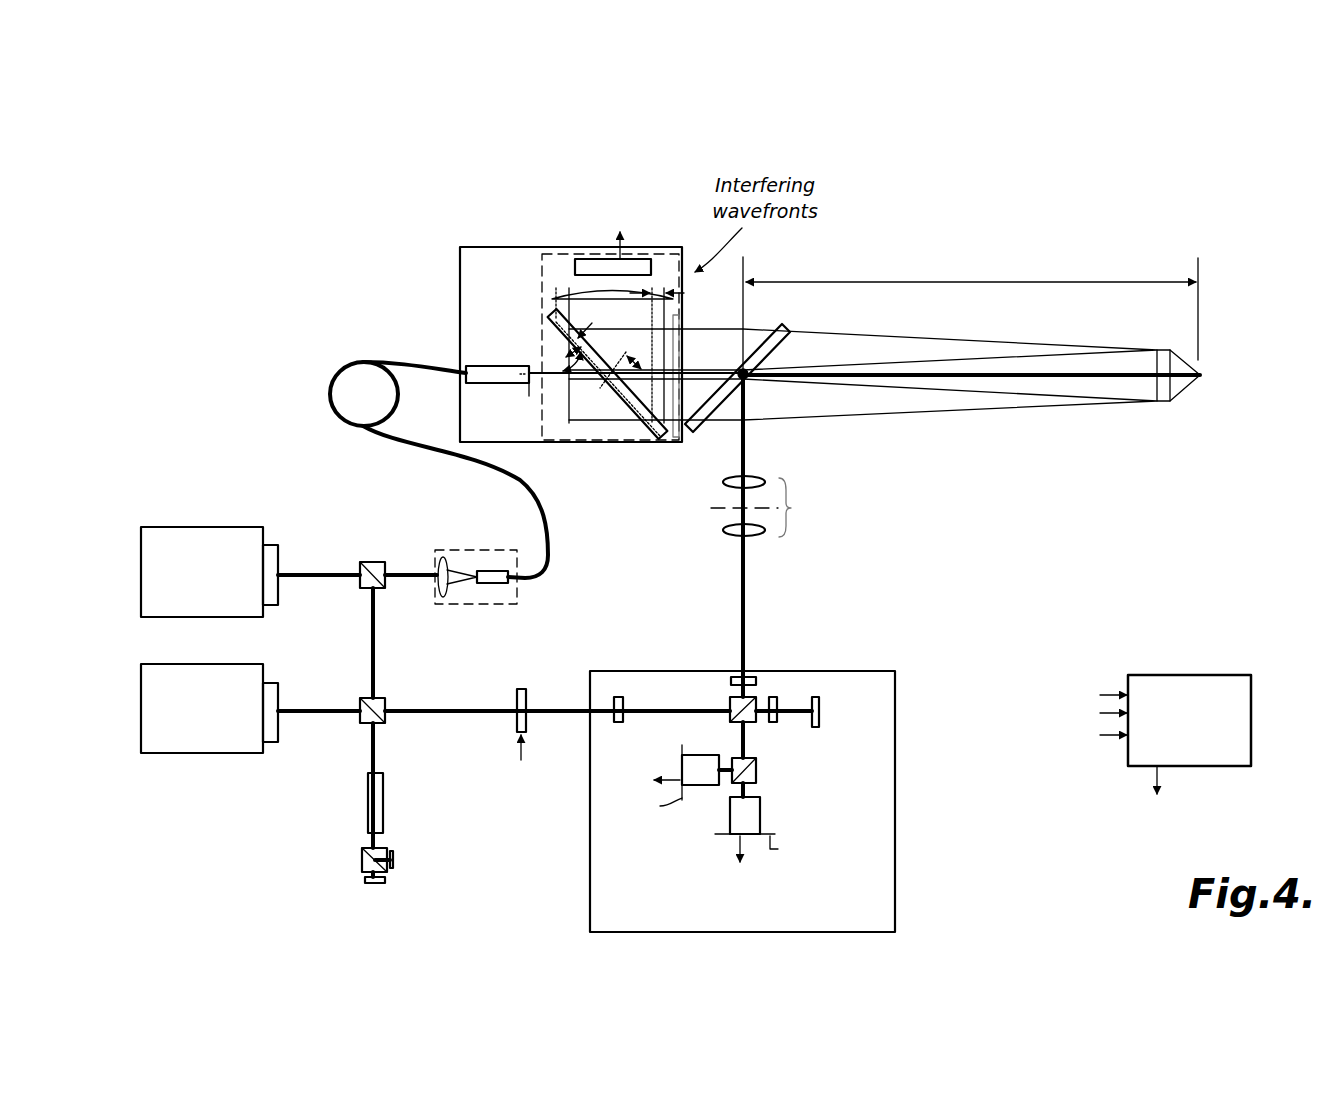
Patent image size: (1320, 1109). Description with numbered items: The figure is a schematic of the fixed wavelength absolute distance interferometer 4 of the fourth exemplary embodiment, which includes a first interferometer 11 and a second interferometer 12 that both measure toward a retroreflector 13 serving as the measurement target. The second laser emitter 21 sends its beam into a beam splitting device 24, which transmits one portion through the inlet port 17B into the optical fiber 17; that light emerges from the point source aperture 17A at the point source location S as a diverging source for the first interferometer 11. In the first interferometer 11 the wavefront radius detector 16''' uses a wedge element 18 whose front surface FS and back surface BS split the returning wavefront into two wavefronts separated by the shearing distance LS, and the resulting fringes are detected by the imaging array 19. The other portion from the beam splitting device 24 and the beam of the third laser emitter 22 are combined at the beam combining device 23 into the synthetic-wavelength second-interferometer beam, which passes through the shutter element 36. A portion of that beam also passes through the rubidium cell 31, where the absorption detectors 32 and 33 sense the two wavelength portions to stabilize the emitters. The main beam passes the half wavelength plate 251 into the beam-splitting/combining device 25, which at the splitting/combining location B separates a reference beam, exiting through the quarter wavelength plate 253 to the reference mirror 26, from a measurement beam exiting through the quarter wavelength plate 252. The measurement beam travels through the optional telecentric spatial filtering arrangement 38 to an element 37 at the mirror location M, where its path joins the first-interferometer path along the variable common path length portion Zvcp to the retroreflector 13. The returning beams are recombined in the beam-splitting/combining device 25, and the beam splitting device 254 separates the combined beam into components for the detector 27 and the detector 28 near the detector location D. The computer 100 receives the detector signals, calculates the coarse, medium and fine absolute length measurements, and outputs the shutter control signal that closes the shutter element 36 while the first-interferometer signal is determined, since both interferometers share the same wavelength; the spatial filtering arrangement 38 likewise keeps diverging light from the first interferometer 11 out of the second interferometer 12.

The fixed wavelength absolute distance interferometer 4 is at (1160, 543).
The first interferometer 11 is at (665, 247).
The second interferometer 12 is at (742, 801).
The retroreflector 13 is at (1180, 385).
The wavefront radius detector 16''' is at (636, 444).
The optical fiber 17 is at (330, 394).
The point source aperture 17A is at (500, 366).
The inlet port 17B is at (477, 550).
The wedge element 18 is at (553, 313).
The imaging array 19 is at (610, 258).
The second laser emitter 21 is at (141, 571).
The third laser emitter 22 is at (141, 709).
The beam combining device 23 is at (378, 698).
The beam splitting device 24 is at (375, 562).
The beam-splitting/combining device 25 is at (757, 722).
The reference mirror 26 is at (819, 717).
The λ2 detector 27 is at (696, 755).
The λ3 detector 28 is at (760, 810).
The rubidium cell 31 is at (368, 802).
The λ2 absorption detector 32 is at (375, 884).
The λ3 absorption detector 33 is at (393, 860).
The shutter element 36 is at (524, 688).
The mirror 37 is at (700, 430).
The spatial filtering arrangement 38 is at (793, 508).
The computer 100 is at (1161, 748).
The half wavelength plate 251 is at (619, 697).
The quarter wavelength plate 252 is at (733, 677).
The quarter wavelength plate 253 is at (773, 697).
The beam splitting device 254 is at (757, 769).
The detector location D is at (562, 275).
The point source location S is at (530, 396).
The mirror location M is at (752, 382).
The splitting/combining location B is at (737, 676).
The back surface BS is at (615, 385).
The front surface FS is at (650, 412).
The shearing distance LS is at (682, 282).
The variable common path length portion Zvcp is at (975, 283).